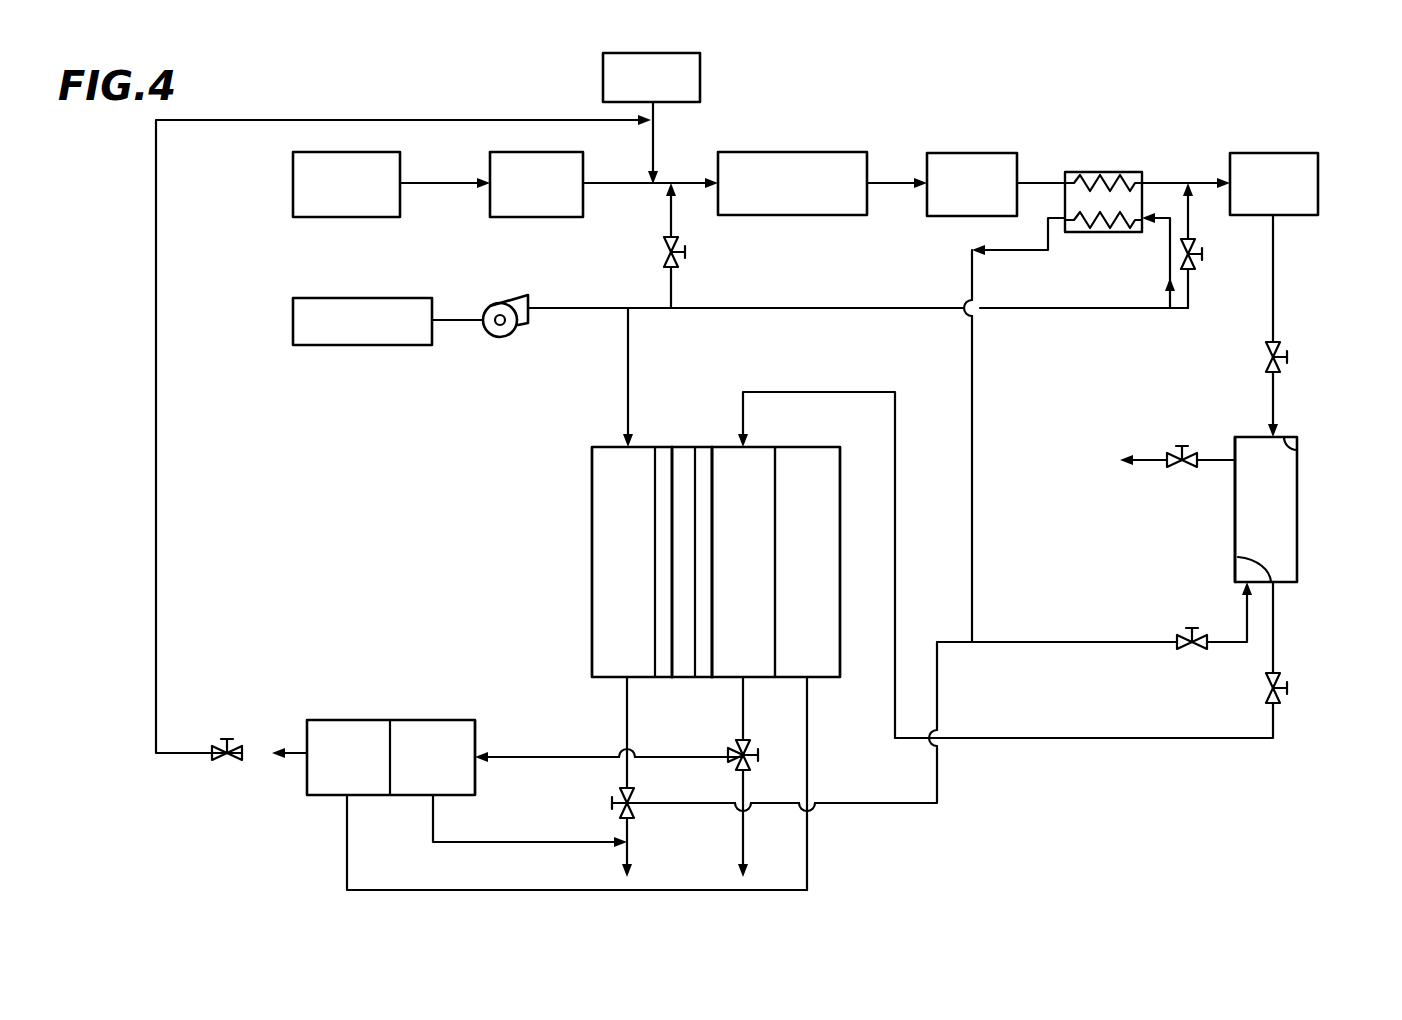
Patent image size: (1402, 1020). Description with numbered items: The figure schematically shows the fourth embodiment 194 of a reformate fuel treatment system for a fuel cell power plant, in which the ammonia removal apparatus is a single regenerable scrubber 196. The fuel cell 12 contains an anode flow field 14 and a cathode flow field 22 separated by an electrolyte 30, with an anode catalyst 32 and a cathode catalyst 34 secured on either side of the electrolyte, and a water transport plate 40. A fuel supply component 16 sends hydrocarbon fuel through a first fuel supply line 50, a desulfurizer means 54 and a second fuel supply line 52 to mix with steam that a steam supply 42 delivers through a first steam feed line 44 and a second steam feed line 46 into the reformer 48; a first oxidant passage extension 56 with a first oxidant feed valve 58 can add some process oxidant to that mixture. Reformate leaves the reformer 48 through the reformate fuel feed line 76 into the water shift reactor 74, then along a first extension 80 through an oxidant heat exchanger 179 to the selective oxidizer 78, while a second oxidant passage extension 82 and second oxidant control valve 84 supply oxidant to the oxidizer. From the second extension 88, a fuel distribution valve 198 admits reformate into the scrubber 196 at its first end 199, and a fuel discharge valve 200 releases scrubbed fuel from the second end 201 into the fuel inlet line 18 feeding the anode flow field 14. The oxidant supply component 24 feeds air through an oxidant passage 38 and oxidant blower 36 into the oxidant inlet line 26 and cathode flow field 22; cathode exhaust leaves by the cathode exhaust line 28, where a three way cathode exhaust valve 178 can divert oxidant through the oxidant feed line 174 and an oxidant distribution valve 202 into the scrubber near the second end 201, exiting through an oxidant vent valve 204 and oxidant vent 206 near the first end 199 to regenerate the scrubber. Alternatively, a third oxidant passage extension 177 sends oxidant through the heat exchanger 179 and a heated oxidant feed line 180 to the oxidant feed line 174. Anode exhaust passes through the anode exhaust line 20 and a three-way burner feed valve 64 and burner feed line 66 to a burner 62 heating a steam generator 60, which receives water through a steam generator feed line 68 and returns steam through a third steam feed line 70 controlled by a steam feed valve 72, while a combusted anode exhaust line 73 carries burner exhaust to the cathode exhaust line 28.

The fuel cell 12 is at (675, 553).
The anode flow field 14 is at (748, 572).
The fuel supply component 16 is at (296, 185).
The fuel inlet line 18 is at (813, 392).
The anode exhaust line 20 is at (810, 710).
The cathode flow field 22 is at (627, 572).
The oxidant supply component 24 is at (353, 345).
The oxidant inlet line 26 is at (632, 375).
The cathode exhaust line 28 is at (625, 725).
The electrolyte 30 is at (682, 460).
The anode catalyst 32 is at (707, 665).
The cathode catalyst 34 is at (665, 665).
The oxidant blower 36 is at (503, 338).
The oxidant passage 38 is at (587, 310).
The water transport plate 40 is at (812, 572).
The steam supply 42 is at (608, 95).
The first steam feed line 44 is at (656, 145).
The second steam feed line 46 is at (682, 188).
The reformer 48 is at (797, 157).
The first fuel supply line 50 is at (432, 181).
The second fuel supply line 52 is at (623, 180).
The desulfurizer means 54 is at (550, 203).
The first oxidant passage extension 56 is at (664, 237).
The first oxidant feed valve 58 is at (678, 268).
The steam generator 60 is at (360, 772).
The burner 62 is at (442, 772).
The three-way burner feed valve 64 is at (752, 763).
The burner feed line 66 is at (657, 760).
The steam generator feed line 68 is at (527, 890).
The third steam feed line 70 is at (157, 593).
The steam feed valve 72 is at (232, 741).
The combusted anode exhaust line 73 is at (517, 842).
The water shift reactor 74 is at (983, 158).
The reformate fuel feed line 76 is at (883, 180).
The selective oxidizer 78 is at (1280, 167).
The first extension of the reformate fuel feed line 80 is at (1045, 180).
The second oxidant passage extension 82 is at (915, 307).
The second oxidant control valve 84 is at (1195, 273).
The second extension of the reformate fuel feed line 88 is at (1277, 250).
The oxidant feed line 174 is at (940, 780).
The third oxidant passage extension 177 is at (1168, 260).
The three way cathode exhaust valve 178 is at (634, 815).
The oxidant heat exchanger 179 is at (1095, 180).
The heated oxidant feed line 180 is at (975, 458).
The fourth embodiment of the reformate fuel treatment system 194 is at (1210, 113).
The single regenerable scrubber 196 is at (1245, 482).
The fuel distribution valve 198 is at (1282, 342).
The first end 199 is at (1300, 445).
The fuel discharge valve 200 is at (1280, 665).
The second end 201 is at (1238, 557).
The oxidant distribution valve 202 is at (1193, 648).
The oxidant vent valve 204 is at (1190, 453).
The oxidant vent 206 is at (1128, 470).